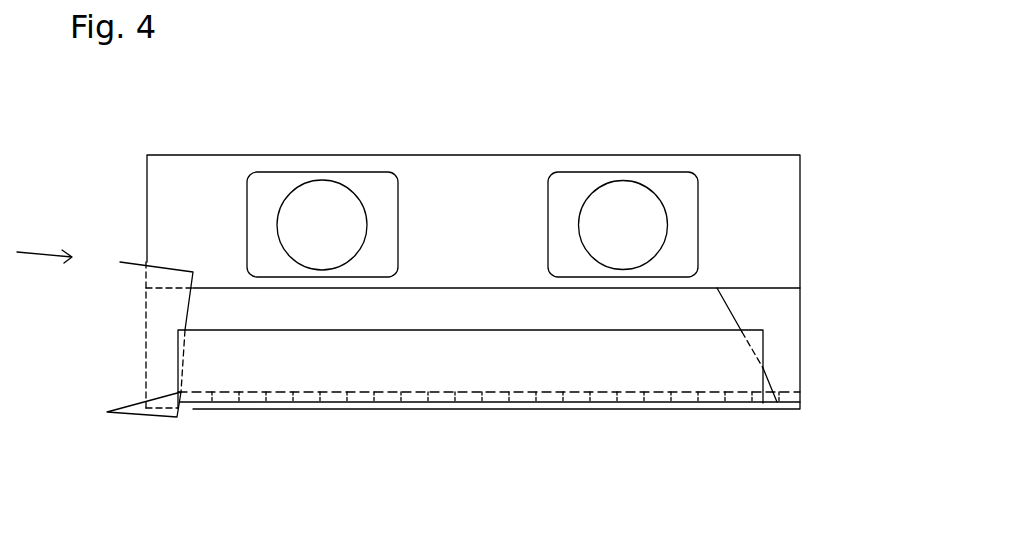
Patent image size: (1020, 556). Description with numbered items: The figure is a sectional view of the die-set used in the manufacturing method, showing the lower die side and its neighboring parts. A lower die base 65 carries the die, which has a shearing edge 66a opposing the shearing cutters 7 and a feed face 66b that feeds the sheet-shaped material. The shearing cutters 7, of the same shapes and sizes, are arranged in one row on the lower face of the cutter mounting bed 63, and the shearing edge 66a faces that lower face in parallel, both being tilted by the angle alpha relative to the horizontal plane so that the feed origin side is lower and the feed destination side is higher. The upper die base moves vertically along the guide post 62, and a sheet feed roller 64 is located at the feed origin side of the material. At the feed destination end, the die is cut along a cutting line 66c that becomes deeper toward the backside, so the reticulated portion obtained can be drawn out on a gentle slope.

The guide post 62 is at (323, 197).
The lower die base 65 is at (473, 183).
The sheet feed roller 64 is at (119, 339).
The cutter mounting bed 63 is at (427, 358).
The shearing edge 66a is at (585, 408).
The feed face 66b is at (313, 303).
The cutting line 66c is at (733, 313).
The shearing cutter 7 is at (527, 395).